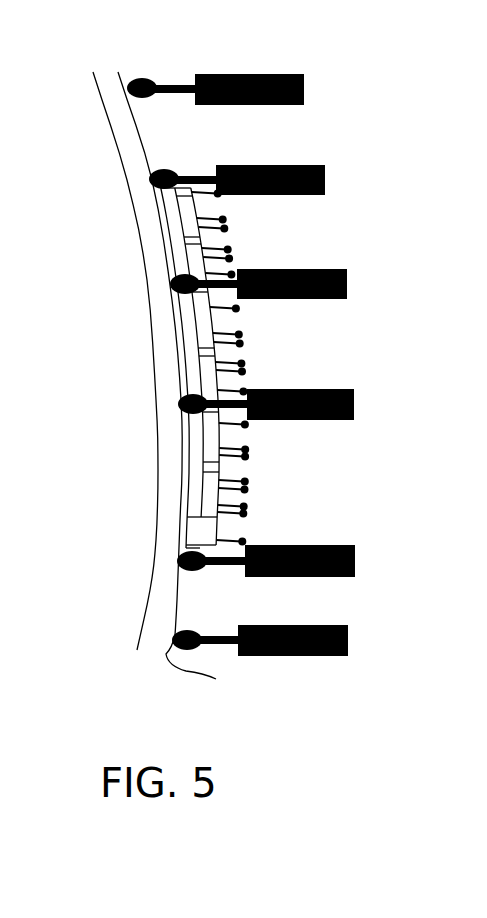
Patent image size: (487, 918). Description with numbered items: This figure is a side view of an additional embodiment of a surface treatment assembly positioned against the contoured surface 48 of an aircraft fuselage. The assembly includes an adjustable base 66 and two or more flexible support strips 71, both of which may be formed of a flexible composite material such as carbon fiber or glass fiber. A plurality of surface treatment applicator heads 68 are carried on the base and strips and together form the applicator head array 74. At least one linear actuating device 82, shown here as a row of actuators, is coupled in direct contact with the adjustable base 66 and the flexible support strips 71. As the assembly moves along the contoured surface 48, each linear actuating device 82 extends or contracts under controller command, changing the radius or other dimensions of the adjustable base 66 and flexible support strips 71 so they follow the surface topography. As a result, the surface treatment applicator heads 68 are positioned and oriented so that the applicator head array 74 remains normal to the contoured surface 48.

The contoured surface 48 is at (102, 98).
The flexible support strips 71 is at (118, 72).
The adjustable base 66 is at (203, 441).
The surface treatment applicator heads 68 is at (218, 495).
The applicator head array 74 is at (312, 366).
The linear actuating device 82 is at (304, 90).